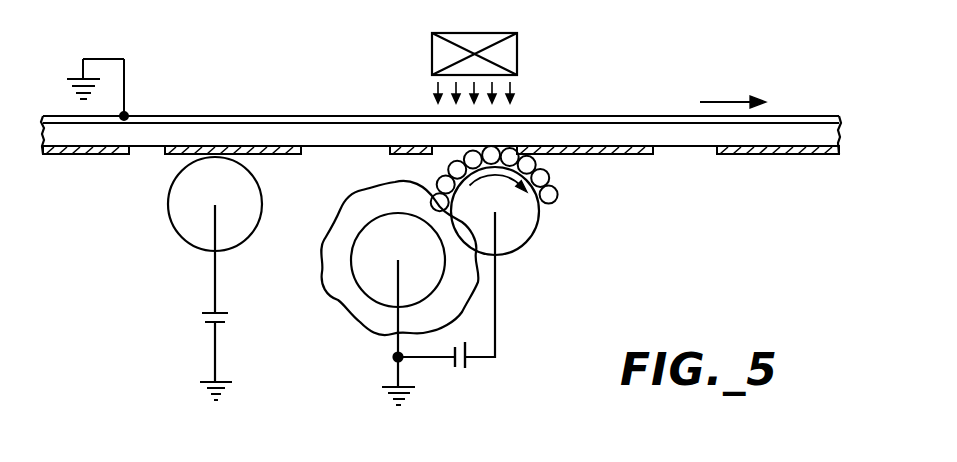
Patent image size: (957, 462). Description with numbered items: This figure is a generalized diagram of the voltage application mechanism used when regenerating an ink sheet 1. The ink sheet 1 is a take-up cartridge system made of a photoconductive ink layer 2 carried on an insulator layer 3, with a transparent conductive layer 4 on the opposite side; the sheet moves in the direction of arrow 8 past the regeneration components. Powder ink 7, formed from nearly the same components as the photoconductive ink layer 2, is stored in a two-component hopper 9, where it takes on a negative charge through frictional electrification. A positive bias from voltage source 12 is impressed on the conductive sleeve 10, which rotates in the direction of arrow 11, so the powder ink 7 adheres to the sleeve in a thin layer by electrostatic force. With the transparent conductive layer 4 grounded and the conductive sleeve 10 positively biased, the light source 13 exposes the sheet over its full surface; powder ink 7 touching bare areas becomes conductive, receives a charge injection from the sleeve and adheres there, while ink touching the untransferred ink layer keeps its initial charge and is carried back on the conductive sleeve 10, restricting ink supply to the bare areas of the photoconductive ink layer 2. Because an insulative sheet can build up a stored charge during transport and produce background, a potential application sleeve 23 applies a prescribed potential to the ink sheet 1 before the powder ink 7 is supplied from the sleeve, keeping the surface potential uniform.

The ink sheet 1 is at (465, 119).
The photoconductive ink layer 2 is at (839, 151).
The insulator layer 3 is at (839, 129).
The transparent conductive layer 4 is at (839, 120).
The powder ink 7 is at (553, 190).
The direction of movement of recording medium 8 is at (732, 96).
The two-component hopper 9 is at (355, 303).
The conductive sleeve 10 is at (520, 238).
The arrow 11 is at (487, 179).
The bias voltage source 12 is at (466, 368).
The light source 13 is at (430, 53).
The potential application sleeve 23 is at (185, 217).